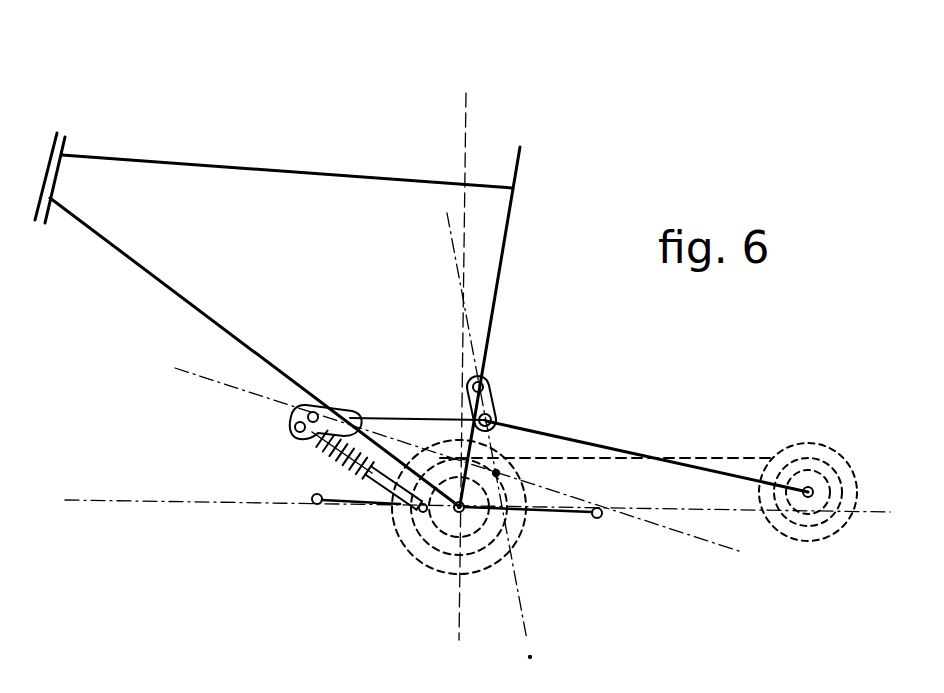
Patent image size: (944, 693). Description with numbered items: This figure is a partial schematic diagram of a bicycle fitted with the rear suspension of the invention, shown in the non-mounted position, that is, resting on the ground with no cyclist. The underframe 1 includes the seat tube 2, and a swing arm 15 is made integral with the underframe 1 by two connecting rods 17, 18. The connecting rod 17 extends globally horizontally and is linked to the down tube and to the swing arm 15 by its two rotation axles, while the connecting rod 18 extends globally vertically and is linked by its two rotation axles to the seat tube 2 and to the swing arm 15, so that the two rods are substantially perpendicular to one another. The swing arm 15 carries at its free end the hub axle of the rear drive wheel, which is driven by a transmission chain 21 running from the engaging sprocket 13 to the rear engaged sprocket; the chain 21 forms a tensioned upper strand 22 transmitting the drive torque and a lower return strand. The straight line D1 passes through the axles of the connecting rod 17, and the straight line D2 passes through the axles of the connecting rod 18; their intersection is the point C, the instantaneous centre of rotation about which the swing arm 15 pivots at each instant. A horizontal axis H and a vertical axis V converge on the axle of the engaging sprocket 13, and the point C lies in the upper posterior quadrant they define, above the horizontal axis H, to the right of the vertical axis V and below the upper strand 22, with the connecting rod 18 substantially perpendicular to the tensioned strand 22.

The underframe 1 is at (273, 270).
The seat tube 2 is at (503, 245).
The engaging sprocket 13 is at (414, 512).
The swing arm 15 is at (553, 433).
The connecting rod 17 is at (342, 410).
The connecting rod 18 is at (493, 396).
The transmission chain 21 is at (764, 435).
The tensioned upper strand 22 is at (578, 457).
The vertical axis V is at (467, 130).
The horizontal axis H is at (136, 501).
The straight line D1 is at (209, 382).
The straight line D2 is at (456, 250).
The instantaneous centre of rotation C is at (500, 472).